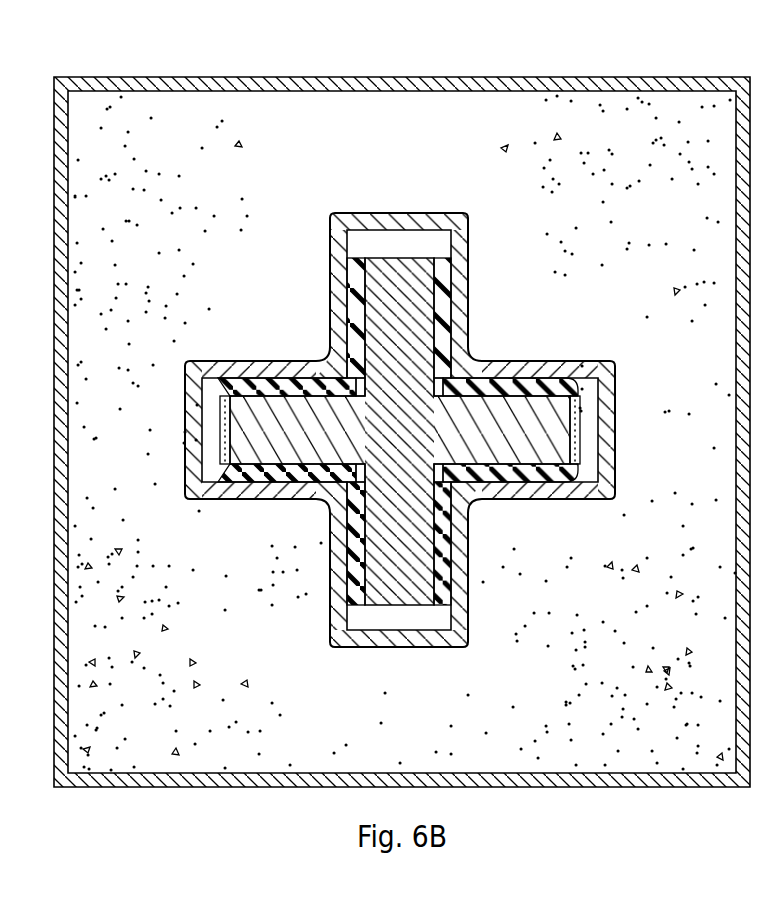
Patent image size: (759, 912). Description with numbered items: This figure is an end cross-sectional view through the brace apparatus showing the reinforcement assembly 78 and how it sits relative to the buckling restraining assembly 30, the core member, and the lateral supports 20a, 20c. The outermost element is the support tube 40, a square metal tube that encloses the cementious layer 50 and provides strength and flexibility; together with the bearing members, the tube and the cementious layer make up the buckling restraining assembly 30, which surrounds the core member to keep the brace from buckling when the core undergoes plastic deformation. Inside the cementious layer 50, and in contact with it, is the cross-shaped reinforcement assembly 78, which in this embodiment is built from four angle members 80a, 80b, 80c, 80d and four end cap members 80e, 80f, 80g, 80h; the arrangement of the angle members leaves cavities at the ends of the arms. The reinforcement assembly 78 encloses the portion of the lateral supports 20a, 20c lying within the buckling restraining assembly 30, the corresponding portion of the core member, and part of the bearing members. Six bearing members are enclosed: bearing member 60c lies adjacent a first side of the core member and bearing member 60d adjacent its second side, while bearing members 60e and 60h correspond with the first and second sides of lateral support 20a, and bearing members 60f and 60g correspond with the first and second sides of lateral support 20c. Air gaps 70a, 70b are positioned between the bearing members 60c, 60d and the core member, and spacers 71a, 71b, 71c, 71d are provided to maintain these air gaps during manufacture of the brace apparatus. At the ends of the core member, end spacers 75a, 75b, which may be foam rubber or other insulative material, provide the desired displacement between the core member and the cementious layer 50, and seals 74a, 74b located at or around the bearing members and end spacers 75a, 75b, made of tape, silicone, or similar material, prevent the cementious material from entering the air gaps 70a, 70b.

The buckling restraining assembly 30 is at (471, 77).
The support tube 40 is at (298, 77).
The cementious layer 50 is at (620, 102).
The reinforcement assembly 78 is at (408, 213).
The angle member 80a is at (332, 232).
The angle member 80b is at (337, 610).
The angle member 80c is at (463, 633).
The angle member 80d is at (572, 368).
The end cap member 80e is at (193, 452).
The end cap member 80f is at (383, 213).
The end cap member 80g is at (605, 450).
The end cap member 80h is at (380, 647).
The air gap 70a is at (207, 361).
The air gap 70b is at (302, 500).
The bearing member 60c is at (297, 380).
The bearing member 60d is at (250, 475).
The bearing member 60e is at (440, 300).
The bearing member 60f is at (437, 592).
The bearing member 60g is at (337, 583).
The bearing member 60h is at (352, 317).
The spacer 71a is at (252, 388).
The spacer 71b is at (523, 393).
The spacer 71c is at (277, 477).
The spacer 71d is at (528, 483).
The seal 74a is at (217, 468).
The seal 74b is at (598, 365).
The lateral support 20a is at (428, 258).
The lateral support 20c is at (455, 606).
The end spacer 75a is at (213, 415).
The end spacer 75b is at (580, 430).